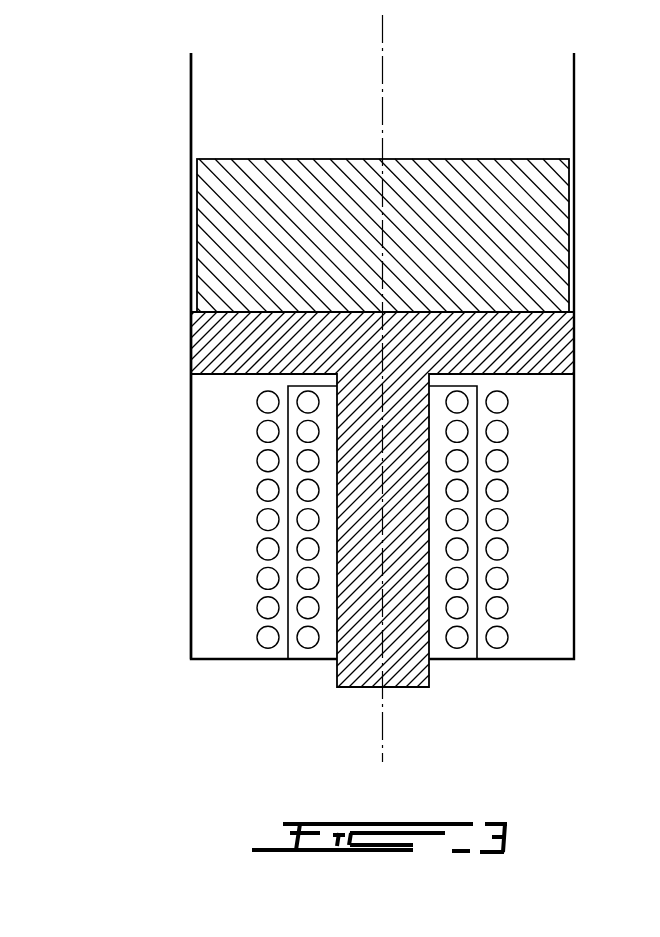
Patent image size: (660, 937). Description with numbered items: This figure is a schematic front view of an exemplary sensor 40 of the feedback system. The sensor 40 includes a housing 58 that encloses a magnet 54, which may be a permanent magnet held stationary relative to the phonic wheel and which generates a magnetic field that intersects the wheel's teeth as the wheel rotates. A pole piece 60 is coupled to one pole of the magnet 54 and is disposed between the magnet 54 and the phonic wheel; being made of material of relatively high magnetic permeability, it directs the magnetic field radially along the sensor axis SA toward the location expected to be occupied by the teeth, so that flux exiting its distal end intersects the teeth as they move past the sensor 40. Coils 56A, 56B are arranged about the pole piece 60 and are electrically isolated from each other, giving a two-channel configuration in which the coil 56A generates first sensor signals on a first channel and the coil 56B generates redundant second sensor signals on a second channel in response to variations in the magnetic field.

The sensor 40 is at (162, 129).
The magnet 54 is at (216, 217).
The pole piece 60 is at (217, 343).
The housing 58 is at (191, 407).
The coil 56A is at (297, 549).
The coil 56B is at (257, 608).
The sensor axis SA is at (383, 243).